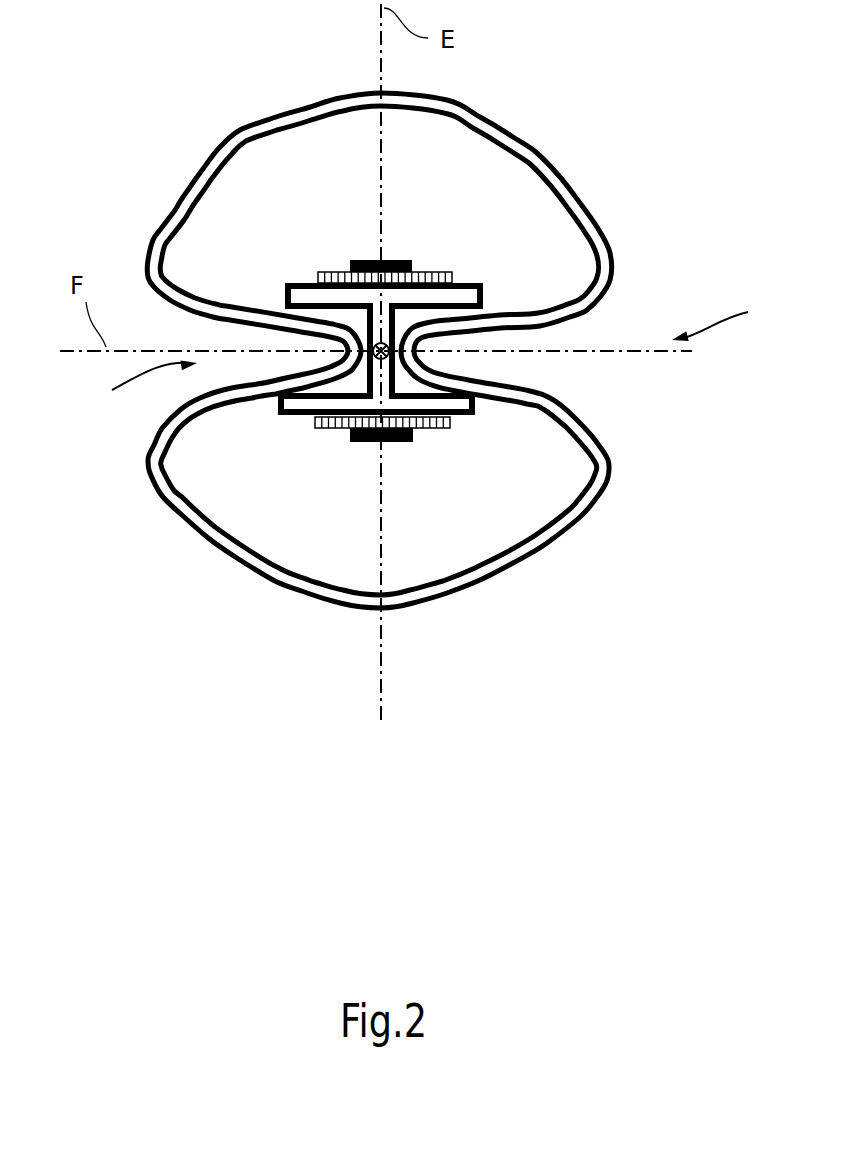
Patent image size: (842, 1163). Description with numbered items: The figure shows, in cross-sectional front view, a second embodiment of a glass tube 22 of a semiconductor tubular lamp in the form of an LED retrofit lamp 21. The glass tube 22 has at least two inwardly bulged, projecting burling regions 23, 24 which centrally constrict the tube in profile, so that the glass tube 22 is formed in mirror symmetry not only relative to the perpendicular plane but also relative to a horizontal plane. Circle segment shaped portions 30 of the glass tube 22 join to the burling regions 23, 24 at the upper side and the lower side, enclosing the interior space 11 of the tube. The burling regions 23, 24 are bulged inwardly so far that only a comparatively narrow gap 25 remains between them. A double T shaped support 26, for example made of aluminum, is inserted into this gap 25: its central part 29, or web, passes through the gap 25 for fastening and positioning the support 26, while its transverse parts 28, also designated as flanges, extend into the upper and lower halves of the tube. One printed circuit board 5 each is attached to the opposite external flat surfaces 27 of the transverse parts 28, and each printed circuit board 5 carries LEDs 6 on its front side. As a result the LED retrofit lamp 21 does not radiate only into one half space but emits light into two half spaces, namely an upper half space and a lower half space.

The LED retrofit lamp 21 is at (122, 147).
The glass tube 22 is at (537, 146).
The circle segment shaped portions 30 is at (279, 111).
The interior space 11 is at (552, 217).
The printed circuit board 5 is at (443, 273).
The LEDs 6 is at (396, 262).
The external flat surfaces 27 is at (477, 284).
The gap 25 is at (365, 337).
The double T shaped support 26 is at (485, 297).
The transverse parts 28 is at (475, 405).
The central part 29 is at (381, 351).
The burling region 23 is at (136, 381).
The burling region 24 is at (726, 318).